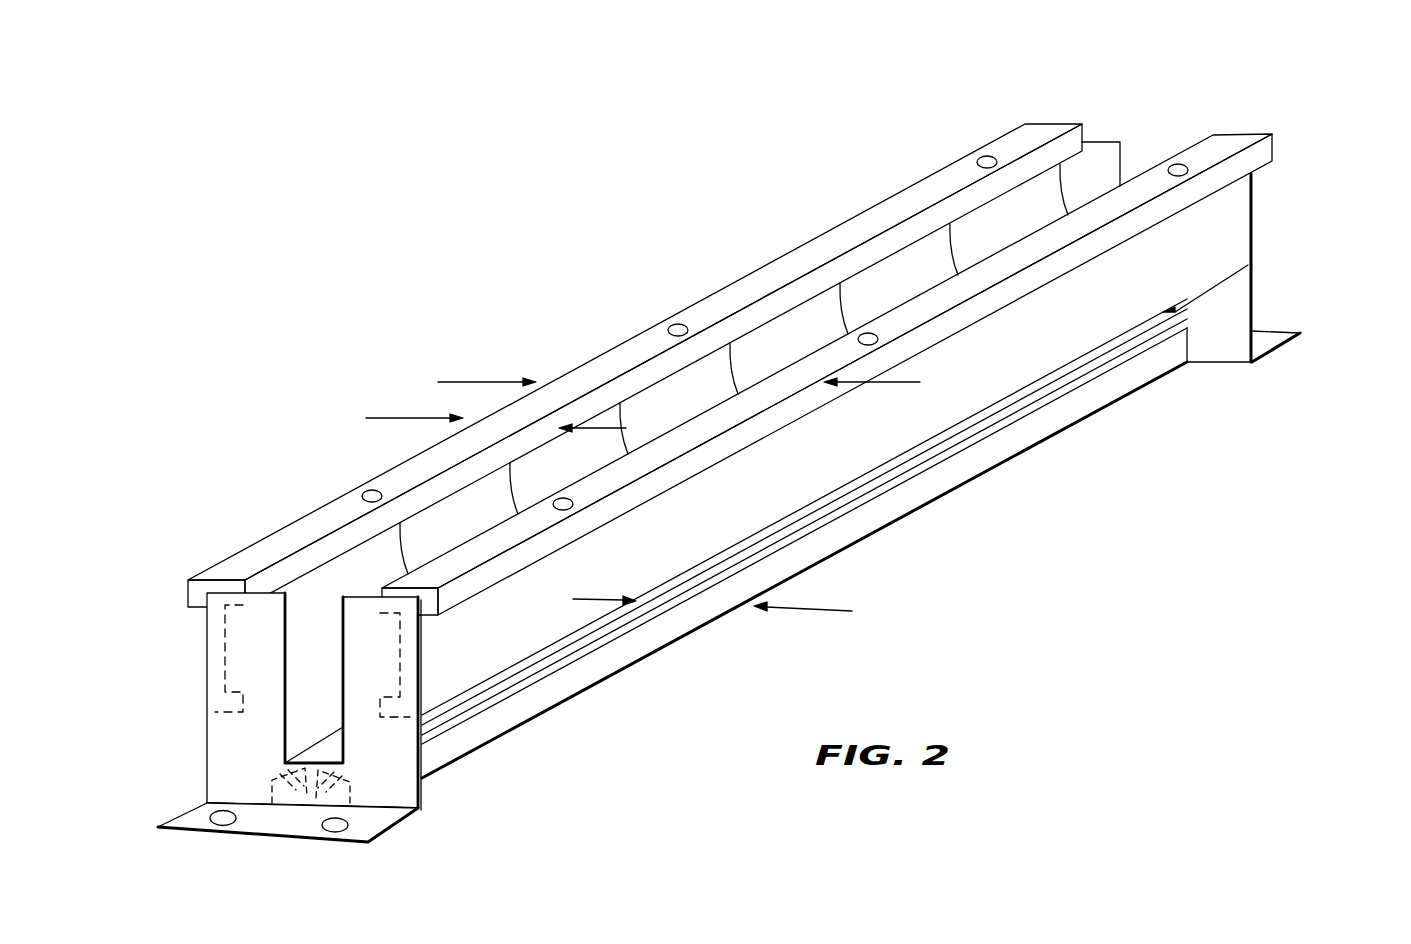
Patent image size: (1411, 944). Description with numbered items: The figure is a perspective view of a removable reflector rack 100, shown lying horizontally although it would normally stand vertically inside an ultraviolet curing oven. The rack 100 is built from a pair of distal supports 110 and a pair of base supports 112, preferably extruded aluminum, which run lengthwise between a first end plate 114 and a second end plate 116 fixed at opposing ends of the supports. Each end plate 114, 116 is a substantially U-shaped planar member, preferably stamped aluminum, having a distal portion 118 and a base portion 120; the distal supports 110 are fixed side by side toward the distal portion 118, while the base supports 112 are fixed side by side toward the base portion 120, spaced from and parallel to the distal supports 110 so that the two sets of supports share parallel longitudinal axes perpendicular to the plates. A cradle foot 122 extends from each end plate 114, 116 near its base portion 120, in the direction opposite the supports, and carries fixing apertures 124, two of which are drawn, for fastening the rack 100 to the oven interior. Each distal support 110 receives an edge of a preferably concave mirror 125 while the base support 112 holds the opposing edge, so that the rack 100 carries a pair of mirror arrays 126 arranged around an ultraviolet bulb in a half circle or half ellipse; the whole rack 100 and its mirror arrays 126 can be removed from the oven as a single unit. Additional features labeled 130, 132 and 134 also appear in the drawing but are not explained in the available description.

The removable reflector rack 100 is at (723, 489).
The distal supports 110 is at (706, 341).
The base supports 112 is at (520, 731).
The first end plate 114 is at (218, 752).
The second end plate 116 is at (1220, 310).
The distal portion 118 is at (306, 731).
The base portion 120 is at (444, 804).
The cradle foot 122 is at (767, 621).
The fixing aperture 124 is at (223, 825).
The mirror 125 is at (790, 330).
The mirror arrays 126 is at (1073, 188).
The top rail tab 130 is at (230, 572).
The hidden tab 132 is at (212, 668).
The rail hole 134 is at (672, 322).